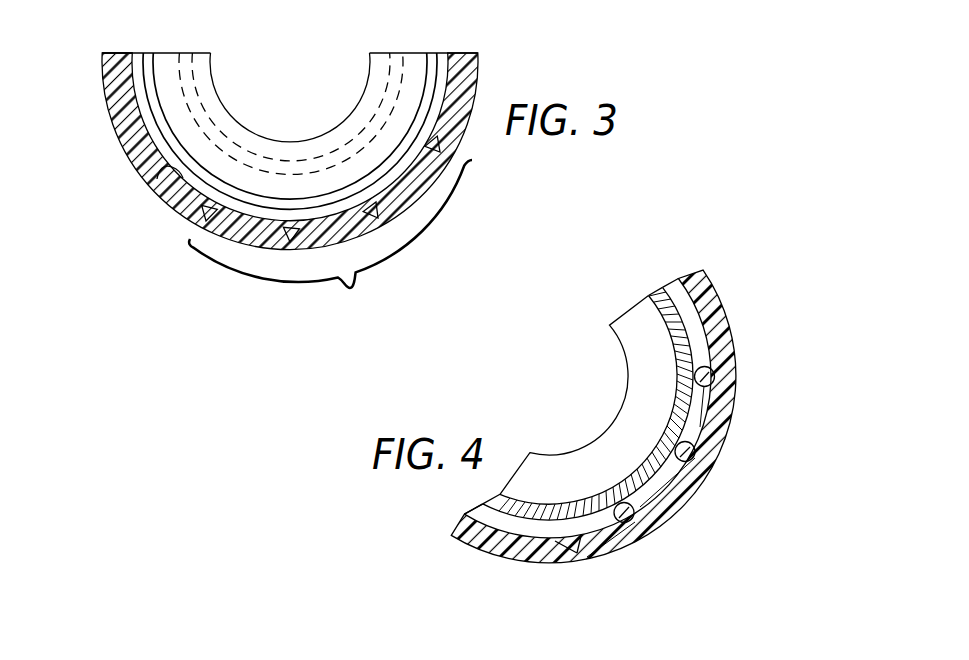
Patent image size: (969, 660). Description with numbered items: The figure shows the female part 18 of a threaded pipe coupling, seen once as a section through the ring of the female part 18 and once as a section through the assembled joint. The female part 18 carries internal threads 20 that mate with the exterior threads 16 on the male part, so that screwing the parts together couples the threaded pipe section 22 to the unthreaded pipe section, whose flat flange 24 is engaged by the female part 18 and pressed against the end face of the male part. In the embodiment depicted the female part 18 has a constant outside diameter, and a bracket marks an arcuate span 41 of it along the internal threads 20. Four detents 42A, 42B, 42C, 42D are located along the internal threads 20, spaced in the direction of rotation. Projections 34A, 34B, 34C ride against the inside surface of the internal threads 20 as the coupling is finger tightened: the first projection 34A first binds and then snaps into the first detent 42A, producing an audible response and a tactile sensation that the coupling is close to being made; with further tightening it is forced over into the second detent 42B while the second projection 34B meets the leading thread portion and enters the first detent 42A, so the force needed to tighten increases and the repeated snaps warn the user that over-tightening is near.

In FIG. 4, the exterior threads 16 is at (700, 340).
In FIG. 3, the female part 18 is at (132, 168).
In FIG. 4, the female part 18 is at (703, 279).
In FIG. 3, the internal threads 20 is at (157, 179).
In FIG. 4, the internal threads 20 is at (498, 522).
In FIG. 3, the threaded pipe section 22 is at (108, 55).
In FIG. 3, the flat flange 24 is at (150, 95).
In FIG. 4, the flat flange 24 is at (572, 503).
In FIG. 4, the first projection 34A is at (631, 521).
In FIG. 4, the second projection 34B is at (693, 459).
In FIG. 4, the third projection 34C is at (714, 378).
In FIG. 3, the arc section 41 is at (330, 241).
In FIG. 3, the first detent 42A is at (431, 141).
In FIG. 4, the first detent 42A is at (711, 370).
In FIG. 3, the second detent 42B is at (370, 207).
In FIG. 4, the second detent 42B is at (694, 446).
In FIG. 3, the third detent 42C is at (291, 228).
In FIG. 4, the third detent 42C is at (633, 518).
In FIG. 3, the fourth detent 42D is at (210, 207).
In FIG. 4, the fourth detent 42D is at (582, 556).